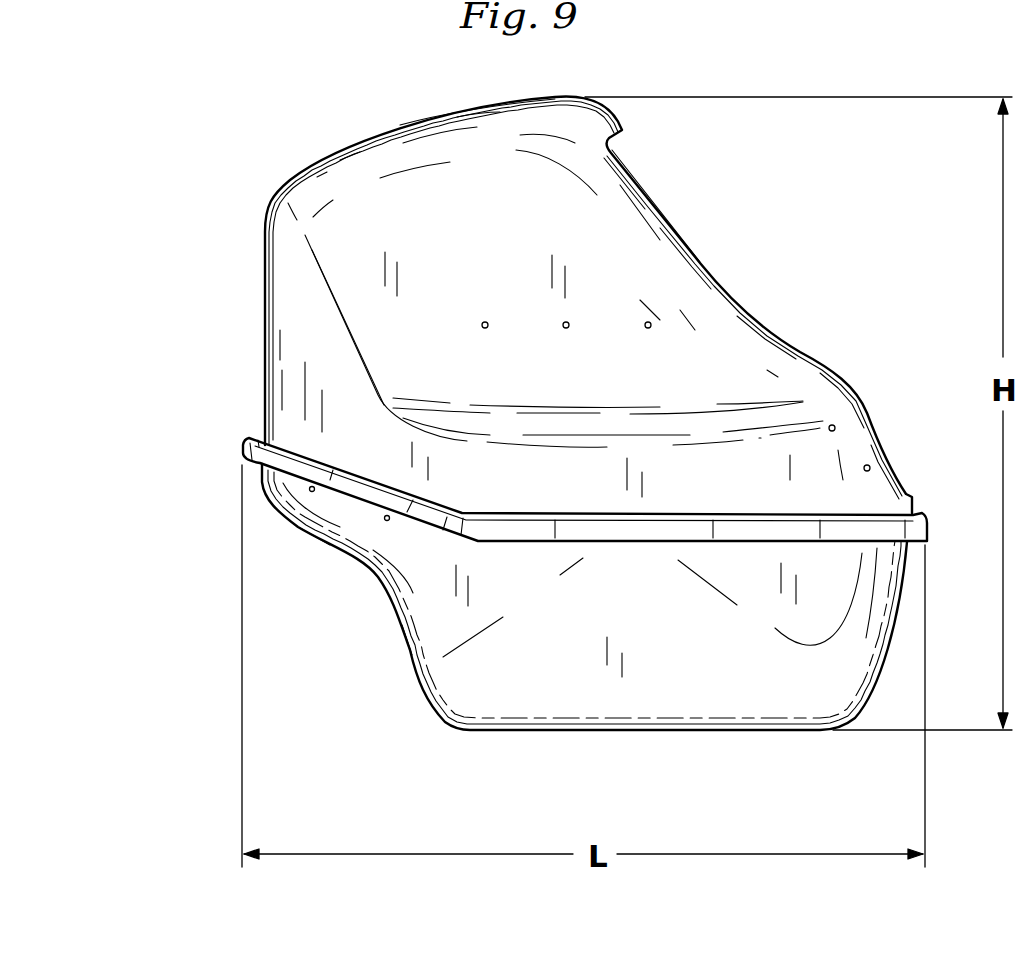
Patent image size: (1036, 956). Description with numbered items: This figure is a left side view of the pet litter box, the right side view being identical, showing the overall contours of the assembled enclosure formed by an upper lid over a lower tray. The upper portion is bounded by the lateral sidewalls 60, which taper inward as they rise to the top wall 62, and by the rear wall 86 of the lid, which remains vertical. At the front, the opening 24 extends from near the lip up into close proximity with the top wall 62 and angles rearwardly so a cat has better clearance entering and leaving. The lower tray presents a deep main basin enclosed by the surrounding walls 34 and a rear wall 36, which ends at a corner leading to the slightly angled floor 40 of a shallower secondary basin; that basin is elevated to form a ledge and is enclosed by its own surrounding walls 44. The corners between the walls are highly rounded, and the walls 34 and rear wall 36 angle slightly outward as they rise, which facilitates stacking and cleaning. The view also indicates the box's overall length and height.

The top wall 62 is at (387, 128).
The opening 24 is at (640, 187).
The rear wall 86 is at (266, 276).
The lateral sidewalls 60 is at (546, 368).
The surrounding walls 44 is at (363, 537).
The angled floor 40 is at (323, 548).
The rear wall 36 is at (405, 656).
The surrounding walls 34 is at (697, 668).